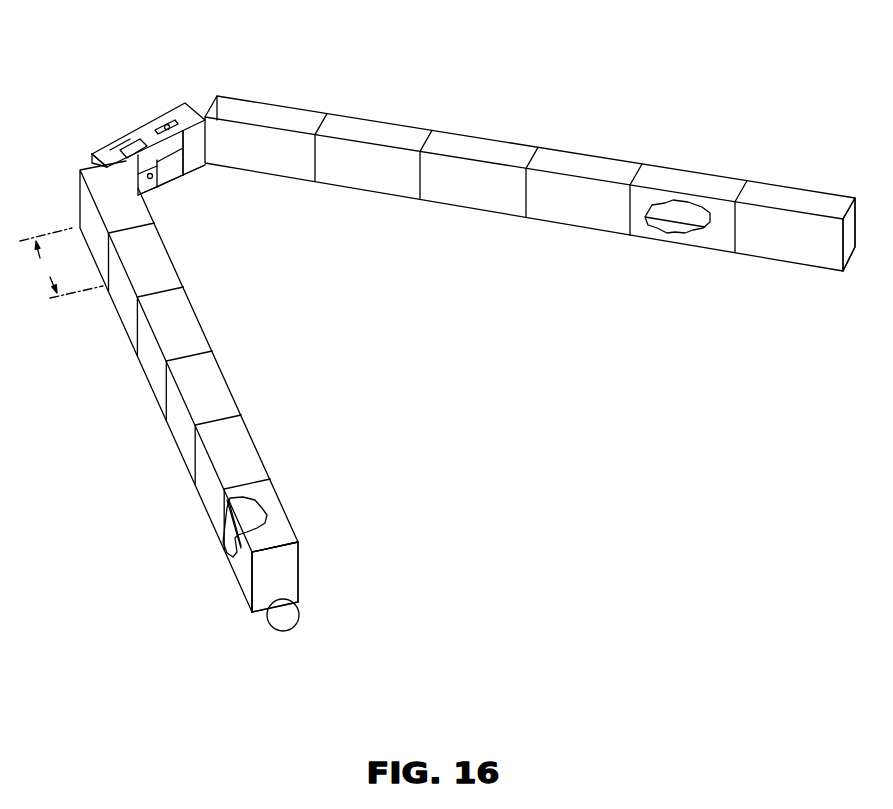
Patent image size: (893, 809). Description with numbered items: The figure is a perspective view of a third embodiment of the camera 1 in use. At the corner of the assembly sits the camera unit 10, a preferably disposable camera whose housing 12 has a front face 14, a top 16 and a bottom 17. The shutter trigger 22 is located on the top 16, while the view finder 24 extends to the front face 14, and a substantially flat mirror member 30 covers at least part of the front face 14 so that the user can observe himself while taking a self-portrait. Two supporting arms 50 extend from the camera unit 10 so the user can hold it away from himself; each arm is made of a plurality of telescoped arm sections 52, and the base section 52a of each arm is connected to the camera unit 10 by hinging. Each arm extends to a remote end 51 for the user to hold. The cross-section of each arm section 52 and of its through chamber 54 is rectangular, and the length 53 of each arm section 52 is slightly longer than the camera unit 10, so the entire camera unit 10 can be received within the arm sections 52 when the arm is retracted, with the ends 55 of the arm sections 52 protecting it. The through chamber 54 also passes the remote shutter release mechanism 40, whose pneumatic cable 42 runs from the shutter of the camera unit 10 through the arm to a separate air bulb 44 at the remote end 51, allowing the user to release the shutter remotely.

The camera 1 is at (686, 90).
The camera unit 10 is at (170, 103).
The housing 12 is at (121, 143).
The front face 14 is at (177, 176).
The top 16 is at (148, 128).
The bottom 17 is at (150, 195).
The shutter trigger 22 is at (95, 153).
The view finder 24 is at (132, 139).
The mirror member 30 is at (164, 188).
The remote shutter release mechanism 40 is at (224, 591).
The pneumatic cable 42 is at (221, 533).
The air bulb 44 is at (296, 631).
The supporting arm 50 is at (475, 208).
The remote end 51 is at (813, 198).
The arm sections 52 is at (357, 176).
The base section 52a is at (247, 161).
The length 53 is at (61, 263).
The through chamber 54 is at (693, 233).
The ends 55 is at (849, 247).